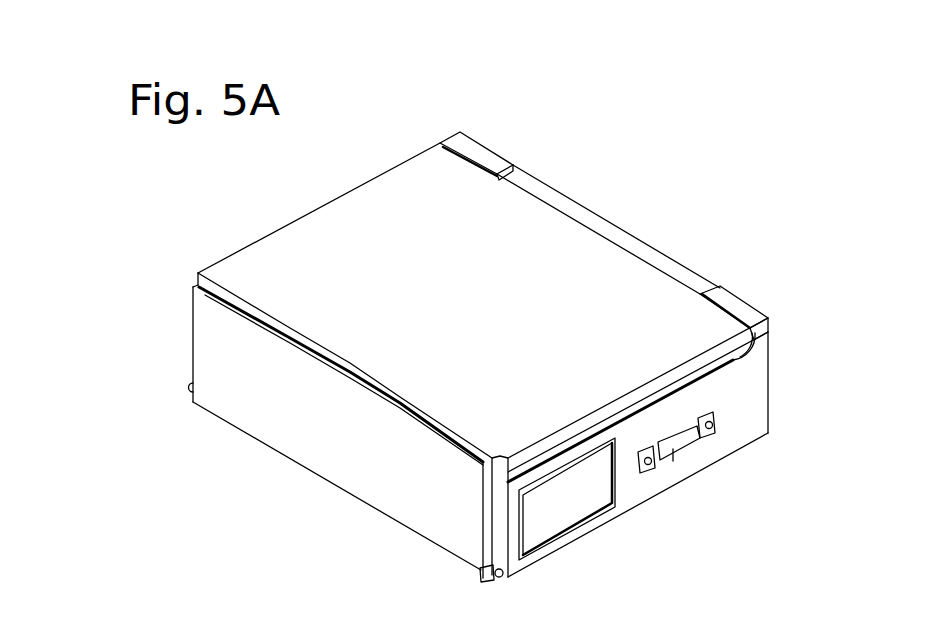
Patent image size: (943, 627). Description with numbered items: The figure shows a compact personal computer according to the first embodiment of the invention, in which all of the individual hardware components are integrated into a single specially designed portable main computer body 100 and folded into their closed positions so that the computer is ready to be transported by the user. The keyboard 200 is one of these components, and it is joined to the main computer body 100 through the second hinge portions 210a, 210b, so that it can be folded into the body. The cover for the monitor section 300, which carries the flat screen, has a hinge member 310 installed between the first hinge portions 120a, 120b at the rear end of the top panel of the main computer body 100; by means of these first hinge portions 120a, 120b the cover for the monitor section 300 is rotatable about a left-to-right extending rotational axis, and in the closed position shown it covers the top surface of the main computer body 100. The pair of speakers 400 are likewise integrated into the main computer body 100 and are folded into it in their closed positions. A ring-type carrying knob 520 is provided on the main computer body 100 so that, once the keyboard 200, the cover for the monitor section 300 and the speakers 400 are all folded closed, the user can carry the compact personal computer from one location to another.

The main computer body 100 is at (423, 345).
The first hinge portion 120a is at (740, 307).
The first hinge portion 120b is at (488, 143).
The keyboard 200 is at (238, 410).
The second hinge portion 210a is at (507, 565).
The second hinge portion 210b is at (190, 387).
The cover for the monitor section 300 is at (545, 232).
The hinge member 310 is at (635, 255).
The speakers 400 is at (580, 505).
The ring-type carrying knob 520 is at (690, 448).